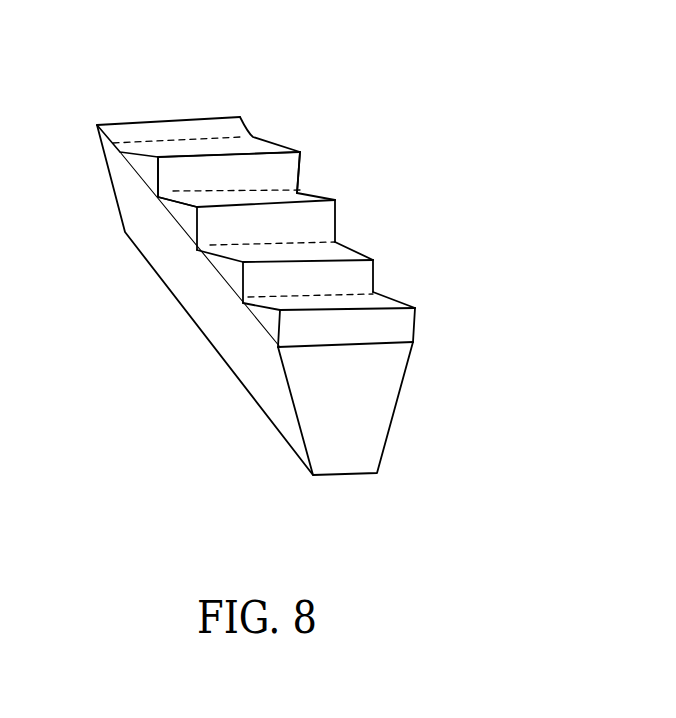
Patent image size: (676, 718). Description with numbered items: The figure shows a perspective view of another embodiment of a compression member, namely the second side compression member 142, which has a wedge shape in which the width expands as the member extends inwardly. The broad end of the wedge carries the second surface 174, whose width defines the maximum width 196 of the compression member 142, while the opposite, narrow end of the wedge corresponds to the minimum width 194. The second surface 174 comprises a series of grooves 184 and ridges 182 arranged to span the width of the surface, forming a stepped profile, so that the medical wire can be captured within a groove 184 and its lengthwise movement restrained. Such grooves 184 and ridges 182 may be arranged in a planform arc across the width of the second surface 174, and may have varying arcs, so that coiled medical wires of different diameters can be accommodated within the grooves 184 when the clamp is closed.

The second side compression member 142 is at (302, 296).
The second surface 174 is at (265, 170).
The ridge 182 is at (187, 190).
The groove 184 is at (220, 157).
The minimum width for wedge-shaped compression member 194 is at (347, 475).
The maximum width for wedge-shaped compression member 196 is at (357, 348).